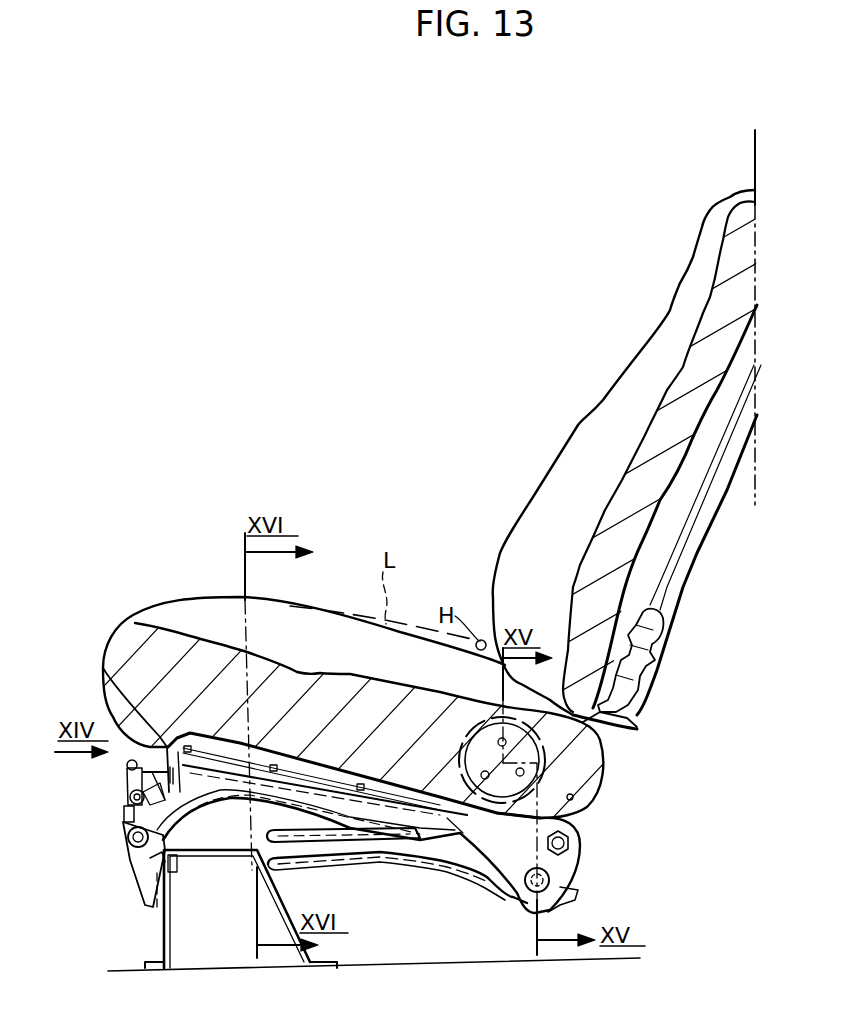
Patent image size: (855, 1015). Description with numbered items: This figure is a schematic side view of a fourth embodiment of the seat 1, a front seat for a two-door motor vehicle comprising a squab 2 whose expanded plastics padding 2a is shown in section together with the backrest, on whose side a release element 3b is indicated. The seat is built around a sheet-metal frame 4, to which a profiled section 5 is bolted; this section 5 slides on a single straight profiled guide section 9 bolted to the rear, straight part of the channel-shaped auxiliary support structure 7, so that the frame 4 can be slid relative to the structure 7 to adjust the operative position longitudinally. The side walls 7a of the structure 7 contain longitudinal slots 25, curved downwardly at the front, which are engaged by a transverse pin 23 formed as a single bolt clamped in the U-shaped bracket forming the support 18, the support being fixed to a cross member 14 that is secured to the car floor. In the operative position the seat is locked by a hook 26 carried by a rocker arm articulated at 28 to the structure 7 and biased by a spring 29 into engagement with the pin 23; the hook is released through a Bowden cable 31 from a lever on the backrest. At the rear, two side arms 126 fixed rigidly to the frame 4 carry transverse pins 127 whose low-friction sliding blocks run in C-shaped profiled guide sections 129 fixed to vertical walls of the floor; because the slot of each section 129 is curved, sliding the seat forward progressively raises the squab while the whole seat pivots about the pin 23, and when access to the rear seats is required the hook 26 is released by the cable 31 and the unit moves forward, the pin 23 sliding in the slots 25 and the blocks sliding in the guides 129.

The seat 1 is at (410, 483).
The squab 2 is at (112, 626).
The expanded plastics padding 2a is at (140, 640).
The backrest lock lever 3b is at (660, 640).
The sheet-metal frame 4 is at (140, 746).
The profiled section 5 is at (492, 860).
The auxiliary support structure 7 is at (222, 828).
The side walls 7a is at (140, 853).
The profiled guide section 9 is at (460, 858).
The cross member 14 is at (293, 902).
The support 18 is at (148, 873).
The pin 23 is at (130, 837).
The longitudinal slot 25 is at (190, 807).
The hook 26 is at (126, 761).
The articulation 28 is at (128, 795).
The spring 29 is at (123, 812).
The Bowden cable 31 is at (103, 668).
The side arms 126 is at (573, 862).
The transverse pins 127 is at (548, 882).
The profiled guide section 129 is at (383, 848).